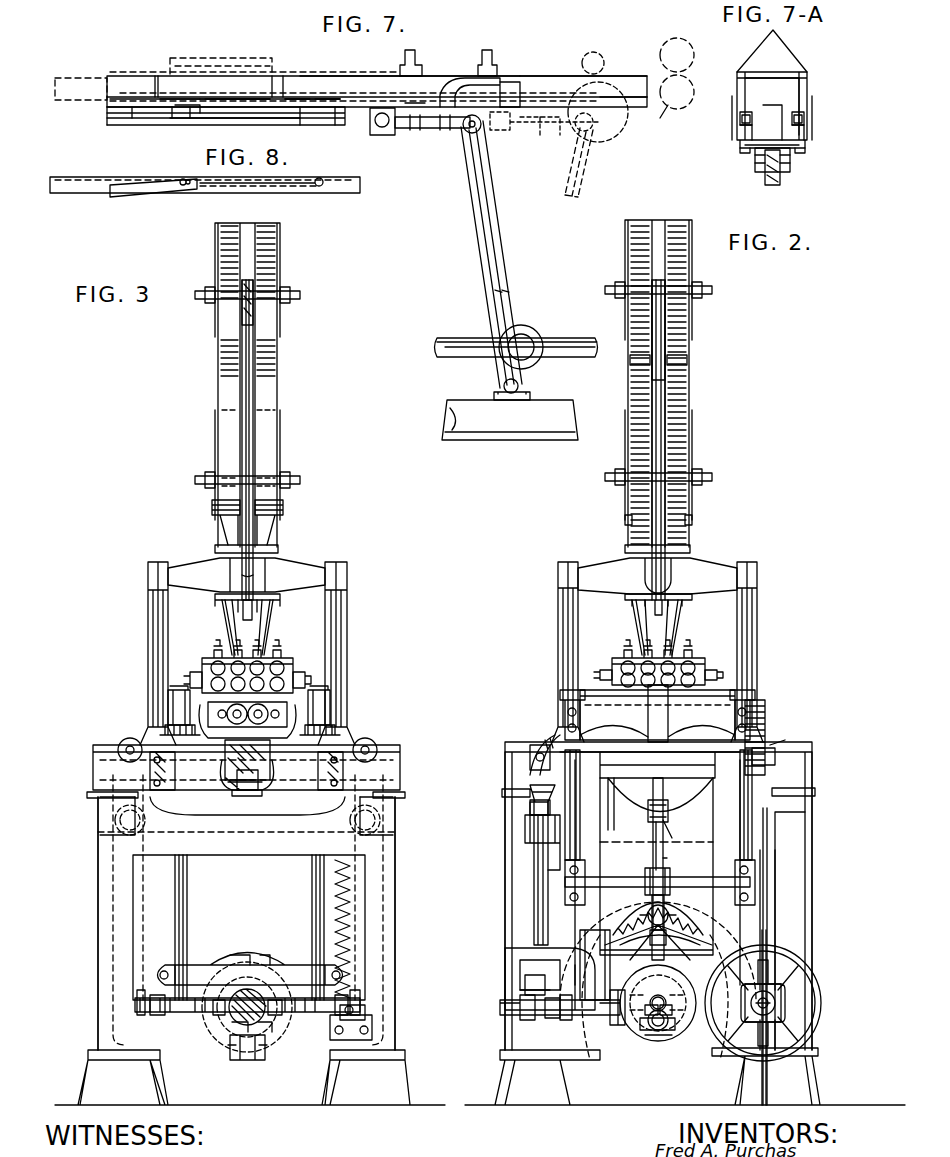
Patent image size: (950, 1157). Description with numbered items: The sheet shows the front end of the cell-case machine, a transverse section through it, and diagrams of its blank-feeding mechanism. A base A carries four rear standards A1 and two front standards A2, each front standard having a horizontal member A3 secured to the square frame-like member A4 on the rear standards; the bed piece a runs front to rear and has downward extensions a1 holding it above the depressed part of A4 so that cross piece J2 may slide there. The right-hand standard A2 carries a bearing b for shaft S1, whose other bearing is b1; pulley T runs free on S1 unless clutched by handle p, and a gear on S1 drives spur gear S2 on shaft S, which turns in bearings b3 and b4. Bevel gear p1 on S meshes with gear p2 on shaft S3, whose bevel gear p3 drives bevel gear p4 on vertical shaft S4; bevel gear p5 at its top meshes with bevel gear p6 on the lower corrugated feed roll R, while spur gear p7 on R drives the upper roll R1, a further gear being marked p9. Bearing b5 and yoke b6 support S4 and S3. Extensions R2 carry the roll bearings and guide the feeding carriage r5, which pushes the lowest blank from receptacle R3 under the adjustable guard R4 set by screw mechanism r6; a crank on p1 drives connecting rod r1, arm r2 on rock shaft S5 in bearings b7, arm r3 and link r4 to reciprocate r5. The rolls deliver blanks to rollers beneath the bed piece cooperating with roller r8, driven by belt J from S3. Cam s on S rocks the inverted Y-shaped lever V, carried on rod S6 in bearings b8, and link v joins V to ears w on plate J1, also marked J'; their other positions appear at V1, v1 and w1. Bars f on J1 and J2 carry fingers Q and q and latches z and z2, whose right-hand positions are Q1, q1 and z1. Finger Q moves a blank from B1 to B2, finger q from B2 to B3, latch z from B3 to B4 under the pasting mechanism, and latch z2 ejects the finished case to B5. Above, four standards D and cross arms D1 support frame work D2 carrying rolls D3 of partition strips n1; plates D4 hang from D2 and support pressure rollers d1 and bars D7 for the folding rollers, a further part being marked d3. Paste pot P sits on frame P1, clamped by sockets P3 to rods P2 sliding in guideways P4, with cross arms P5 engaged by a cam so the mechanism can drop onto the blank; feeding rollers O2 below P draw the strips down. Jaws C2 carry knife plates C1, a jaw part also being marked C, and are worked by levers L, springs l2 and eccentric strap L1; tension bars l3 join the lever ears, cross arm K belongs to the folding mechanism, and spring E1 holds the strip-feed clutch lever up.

In FIG. 7, the bar extension B5 is at (78, 78).
In FIG. 7, the bar extension B4 is at (172, 66).
In FIG. 7, the bar section B3 is at (345, 73).
In FIG. 7, the bar section B2 is at (500, 70).
In FIG. 7, the bar section B1 is at (552, 76).
In FIG. 7, the carriage bracket Q is at (462, 88).
In FIG. 7-A, the carriage bracket Q is at (772, 51).
In FIG. 7, the carriage lug Q1 is at (560, 90).
In FIG. 7, the pin q1 is at (510, 92).
In FIG. 7, the roller r8 is at (612, 75).
In FIG. 7, the rollers R1 is at (685, 46).
In FIG. 2, the rollers R1 is at (640, 780).
In FIG. 7, the roller R is at (677, 120).
In FIG. 2, the roller R is at (670, 770).
In FIG. 7, the plate a is at (630, 82).
In FIG. 7-A, the plate a is at (795, 80).
In FIG. 3, the plate a is at (243, 780).
In FIG. 7, the plate end a1 is at (108, 113).
In FIG. 3, the plate end a1 is at (247, 792).
In FIG. 7, the slide bar f is at (145, 105).
In FIG. 8, the slide bar f is at (338, 185).
In FIG. 7-A, the slide bar f is at (825, 160).
In FIG. 3, the slide bar f is at (228, 784).
In FIG. 7, the guide J2 is at (178, 113).
In FIG. 7, the frame plate A4 is at (197, 120).
In FIG. 3, the frame plate A4 is at (345, 790).
In FIG. 2, the frame plate A4 is at (812, 748).
In FIG. 7, the slide z2 is at (208, 103).
In FIG. 7, the pawl plate z is at (300, 103).
In FIG. 8, the pawl plate z is at (125, 192).
In FIG. 7-A, the pawl plate z is at (820, 102).
In FIG. 7, the pivot bracket J' is at (374, 131).
In FIG. 7, the connecting rod w is at (395, 126).
In FIG. 7-A, the connecting rod w is at (790, 168).
In FIG. 7, the slide pin z1 is at (420, 105).
In FIG. 7, the pivot joint v is at (456, 130).
In FIG. 7, the rod alternate position w1 is at (520, 140).
In FIG. 7, the joint alternate position v1 is at (570, 135).
In FIG. 7, the arm alternate position V1 is at (576, 185).
In FIG. 7, the swinging arm V is at (505, 250).
In FIG. 7-A, the swinging arm V is at (772, 185).
In FIG. 7, the cam s is at (525, 328).
In FIG. 7, the cam shaft S is at (545, 340).
In FIG. 3, the cam shaft S is at (240, 1020).
In FIG. 2, the cam shaft S is at (650, 1010).
In FIG. 7, the pivot b8 is at (500, 386).
In FIG. 7, the bearing S6 is at (522, 392).
In FIG. 7, the base A is at (510, 420).
In FIG. 3, the base A is at (88, 1082).
In FIG. 2, the base A is at (685, 1076).
In FIG. 7-A, the guide slot q is at (825, 118).
In FIG. 7-A, the guide plate J1 is at (805, 145).
In FIG. 3, the feed rollers D3 is at (232, 265).
In FIG. 2, the feed rollers D3 is at (620, 455).
In FIG. 3, the guide rod D2 is at (252, 305).
In FIG. 2, the guide rod D2 is at (665, 398).
In FIG. 3, the collars d1 is at (300, 507).
In FIG. 3, the plate D7 is at (292, 545).
In FIG. 3, the cross head D1 is at (246, 575).
In FIG. 2, the cross head D1 is at (625, 551).
In FIG. 3, the standards D is at (360, 635).
In FIG. 2, the standards D is at (772, 610).
In FIG. 3, the guide bar d3 is at (295, 600).
In FIG. 3, the guide D4 is at (253, 608).
In FIG. 2, the guide D4 is at (692, 598).
In FIG. 3, the wires n1 is at (238, 630).
In FIG. 2, the wires n1 is at (655, 628).
In FIG. 3, the gear box P is at (290, 665).
In FIG. 2, the gear box P is at (700, 665).
In FIG. 3, the journal P1 is at (197, 670).
In FIG. 3, the gear O2 is at (275, 710).
In FIG. 3, the posts P3 is at (345, 692).
In FIG. 3, the nuts P4 is at (350, 722).
In FIG. 3, the table A3 is at (350, 780).
In FIG. 3, the rollers C2 is at (385, 742).
In FIG. 3, the slides C1 is at (220, 762).
In FIG. 3, the slide C is at (270, 758).
In FIG. 3, the rollers l3 is at (247, 820).
In FIG. 3, the lever L is at (400, 850).
In FIG. 2, the lever L is at (800, 735).
In FIG. 3, the frame A1 is at (410, 915).
In FIG. 2, the frame A1 is at (825, 810).
In FIG. 3, the rods P2 is at (187, 885).
In FIG. 3, the spring E1 is at (335, 905).
In FIG. 3, the cross bar P5 is at (200, 965).
In FIG. 2, the cross bar P5 is at (590, 950).
In FIG. 3, the rack L1 is at (235, 960).
In FIG. 3, the lugs l2 is at (370, 965).
In FIG. 3, the bearing b1 is at (365, 1010).
In FIG. 3, the bracket S1 is at (372, 1030).
In FIG. 2, the bracket S1 is at (781, 995).
In FIG. 3, the bearing b3 is at (250, 1040).
In FIG. 2, the journal r6 is at (620, 660).
In FIG. 2, the bearing block R3 is at (565, 705).
In FIG. 2, the trough R4 is at (668, 722).
In FIG. 2, the curved plate r5 is at (614, 725).
In FIG. 2, the rack p9 is at (765, 710).
In FIG. 2, the pinion p7 is at (765, 745).
In FIG. 2, the bearing p6 is at (530, 760).
In FIG. 2, the shaft p5 is at (502, 793).
In FIG. 2, the rods R2 is at (575, 810).
In FIG. 2, the bearing b5 is at (525, 828).
In FIG. 2, the yoke J is at (658, 810).
In FIG. 2, the link r4 is at (682, 826).
In FIG. 2, the rod p is at (768, 900).
In FIG. 2, the rod S4 is at (534, 870).
In FIG. 2, the shaft S5 is at (640, 877).
In FIG. 2, the frame bar A2 is at (656, 835).
In FIG. 2, the link r3 is at (667, 860).
In FIG. 2, the bearings b7 is at (660, 878).
In FIG. 2, the crank rod S2 is at (668, 905).
In FIG. 2, the crank pin r2 is at (652, 905).
In FIG. 2, the gear wheel K is at (705, 918).
In FIG. 2, the bracket b6 is at (510, 965).
In FIG. 2, the collar p4 is at (525, 985).
In FIG. 2, the shaft S3 is at (540, 1010).
In FIG. 2, the pinion p3 is at (555, 1015).
In FIG. 2, the collar p2 is at (625, 1005).
In FIG. 2, the pinion r1 is at (675, 1010).
In FIG. 2, the fly wheel T is at (822, 1003).
In FIG. 2, the belt rod b is at (781, 1012).
In FIG. 2, the bearing b4 is at (640, 1025).
In FIG. 2, the pin p1 is at (650, 1035).